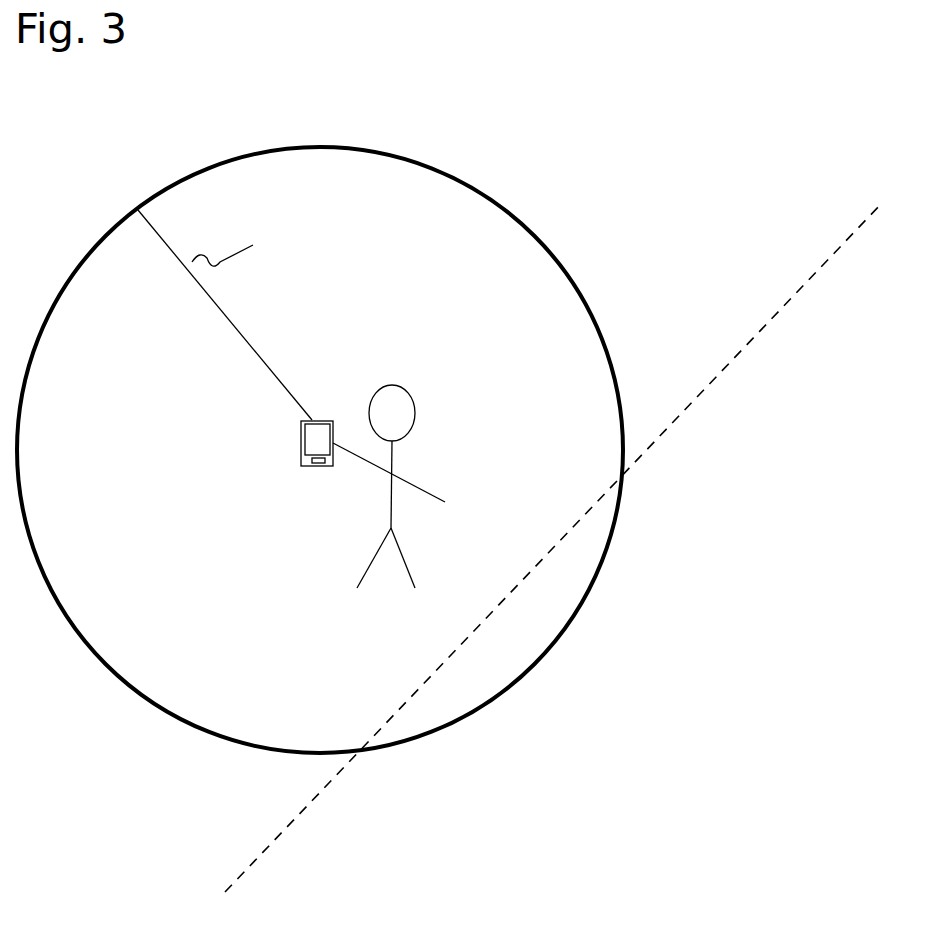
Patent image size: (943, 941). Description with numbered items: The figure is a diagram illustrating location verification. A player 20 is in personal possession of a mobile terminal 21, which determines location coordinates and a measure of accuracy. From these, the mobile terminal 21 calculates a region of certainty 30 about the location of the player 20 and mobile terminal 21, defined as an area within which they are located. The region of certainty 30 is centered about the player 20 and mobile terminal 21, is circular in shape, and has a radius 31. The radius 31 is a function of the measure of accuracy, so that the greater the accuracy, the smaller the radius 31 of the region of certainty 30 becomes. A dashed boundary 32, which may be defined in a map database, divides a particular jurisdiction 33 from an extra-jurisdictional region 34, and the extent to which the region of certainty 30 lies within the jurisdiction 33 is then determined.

The player 20 is at (420, 574).
The mobile terminal 21 is at (300, 457).
The region of certainty 30 is at (590, 332).
The radius 31 is at (248, 366).
The boundary 32 is at (283, 840).
The jurisdiction 33 is at (715, 325).
The extra-jurisdictional region 34 is at (850, 335).